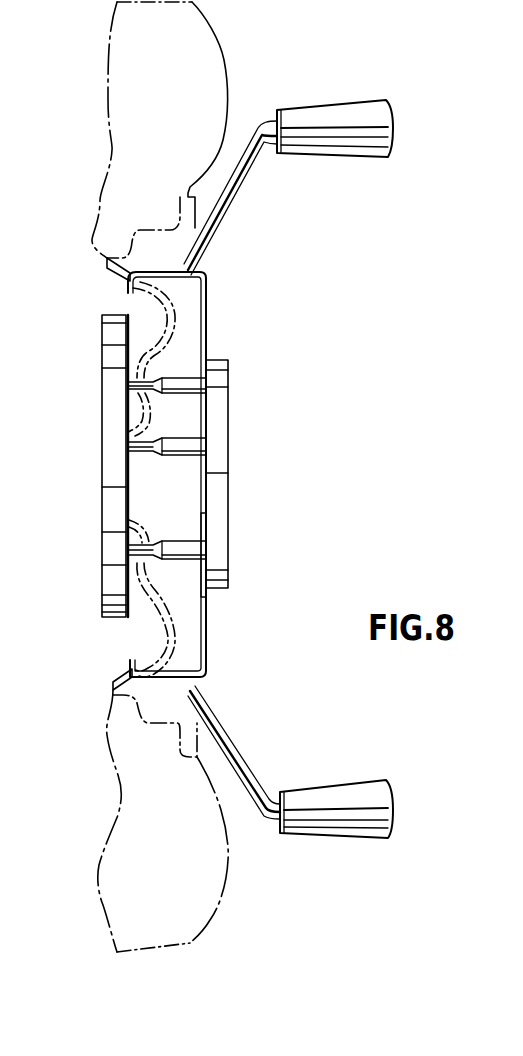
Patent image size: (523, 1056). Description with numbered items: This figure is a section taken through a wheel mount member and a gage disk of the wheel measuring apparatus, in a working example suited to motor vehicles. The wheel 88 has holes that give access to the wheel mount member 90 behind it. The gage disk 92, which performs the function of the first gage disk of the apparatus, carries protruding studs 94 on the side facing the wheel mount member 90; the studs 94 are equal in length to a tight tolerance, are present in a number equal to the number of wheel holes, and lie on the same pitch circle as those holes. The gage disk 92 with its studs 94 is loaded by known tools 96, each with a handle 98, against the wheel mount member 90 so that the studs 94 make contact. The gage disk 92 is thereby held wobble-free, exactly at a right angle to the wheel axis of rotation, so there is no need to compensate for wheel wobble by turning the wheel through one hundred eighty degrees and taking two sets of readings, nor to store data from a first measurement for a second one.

The wheel 88 is at (181, 315).
The wheel mount member 90 is at (108, 383).
The gage disk 92 is at (217, 575).
The studs 94 is at (185, 388).
The tools 96 is at (207, 248).
The handles 98 is at (293, 117).